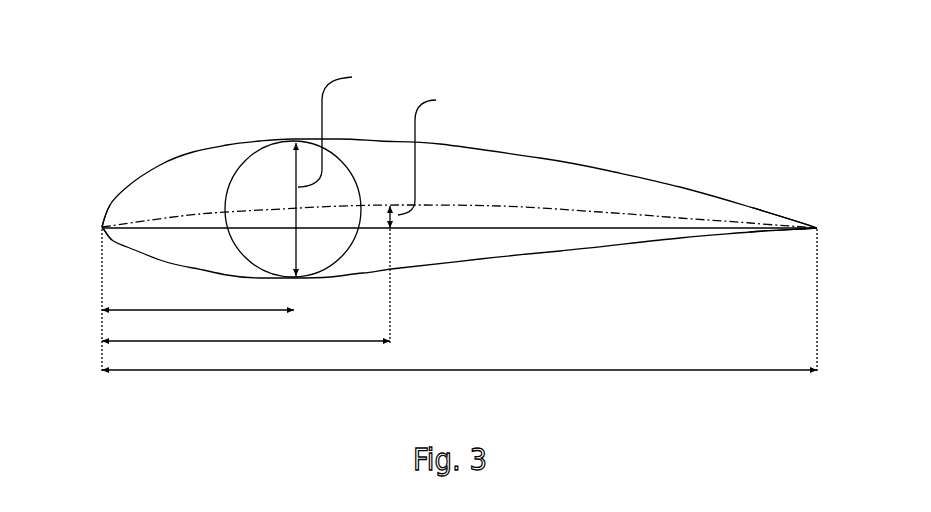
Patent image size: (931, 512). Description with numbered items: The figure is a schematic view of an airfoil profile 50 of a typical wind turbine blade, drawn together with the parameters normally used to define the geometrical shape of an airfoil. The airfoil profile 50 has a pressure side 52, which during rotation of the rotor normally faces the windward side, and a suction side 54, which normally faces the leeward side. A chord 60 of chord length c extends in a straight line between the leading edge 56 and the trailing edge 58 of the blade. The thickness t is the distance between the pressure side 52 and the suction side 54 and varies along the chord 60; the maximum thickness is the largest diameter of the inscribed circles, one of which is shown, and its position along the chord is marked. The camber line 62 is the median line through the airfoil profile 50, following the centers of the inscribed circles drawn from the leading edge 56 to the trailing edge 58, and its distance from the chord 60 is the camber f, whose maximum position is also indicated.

The airfoil profile 50 is at (443, 195).
The pressure side 52 is at (597, 253).
The suction side 54 is at (547, 157).
The leading edge 56 is at (102, 227).
The trailing edge 58 is at (817, 228).
The chord 60 is at (633, 228).
The camber line 62 is at (448, 204).